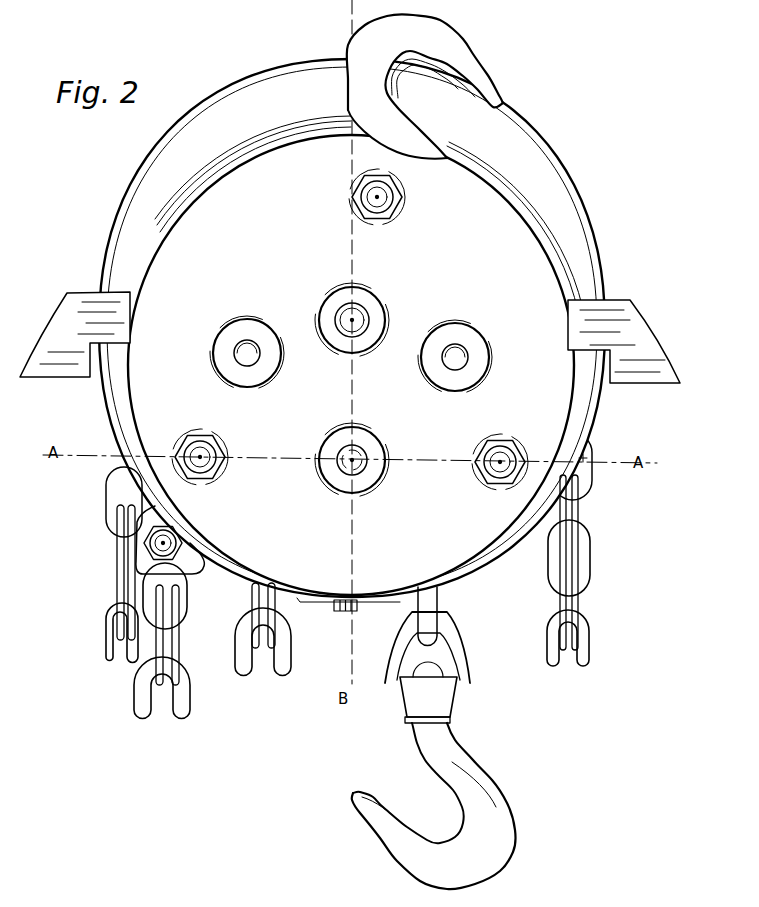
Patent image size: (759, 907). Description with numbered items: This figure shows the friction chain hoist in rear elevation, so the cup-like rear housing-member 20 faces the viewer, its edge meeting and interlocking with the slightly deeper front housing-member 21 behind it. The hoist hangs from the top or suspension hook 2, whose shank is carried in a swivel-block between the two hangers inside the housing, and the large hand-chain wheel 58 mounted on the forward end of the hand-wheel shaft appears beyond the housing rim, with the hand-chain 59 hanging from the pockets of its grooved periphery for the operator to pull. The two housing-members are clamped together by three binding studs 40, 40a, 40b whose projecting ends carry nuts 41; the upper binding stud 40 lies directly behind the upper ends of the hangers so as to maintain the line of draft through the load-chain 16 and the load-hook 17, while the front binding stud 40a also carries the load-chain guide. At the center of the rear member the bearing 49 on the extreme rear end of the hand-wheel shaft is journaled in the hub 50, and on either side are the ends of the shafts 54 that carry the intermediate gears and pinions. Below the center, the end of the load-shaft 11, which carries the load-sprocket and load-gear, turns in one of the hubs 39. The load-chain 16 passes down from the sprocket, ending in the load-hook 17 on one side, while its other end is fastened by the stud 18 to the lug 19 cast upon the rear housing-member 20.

The suspension hook 2 is at (425, 86).
The hand-chain wheel 58 is at (530, 177).
The rear housing-member 20 is at (351, 365).
The front housing-member 21 is at (159, 236).
The upper binding stud 40 is at (395, 200).
The front binding stud 40a is at (500, 450).
The binding stud 40b is at (207, 447).
The nuts 41 is at (389, 214).
The bearing 49 is at (357, 320).
The hub 50 is at (337, 344).
The shafts 54 is at (233, 352).
The hubs 39 is at (328, 446).
The load-shaft 11 is at (340, 470).
The stud 18 is at (150, 557).
The lug 19 is at (157, 573).
The hand-chain 59 is at (113, 637).
The load-chain 16 is at (443, 630).
The load-hook 17 is at (434, 806).